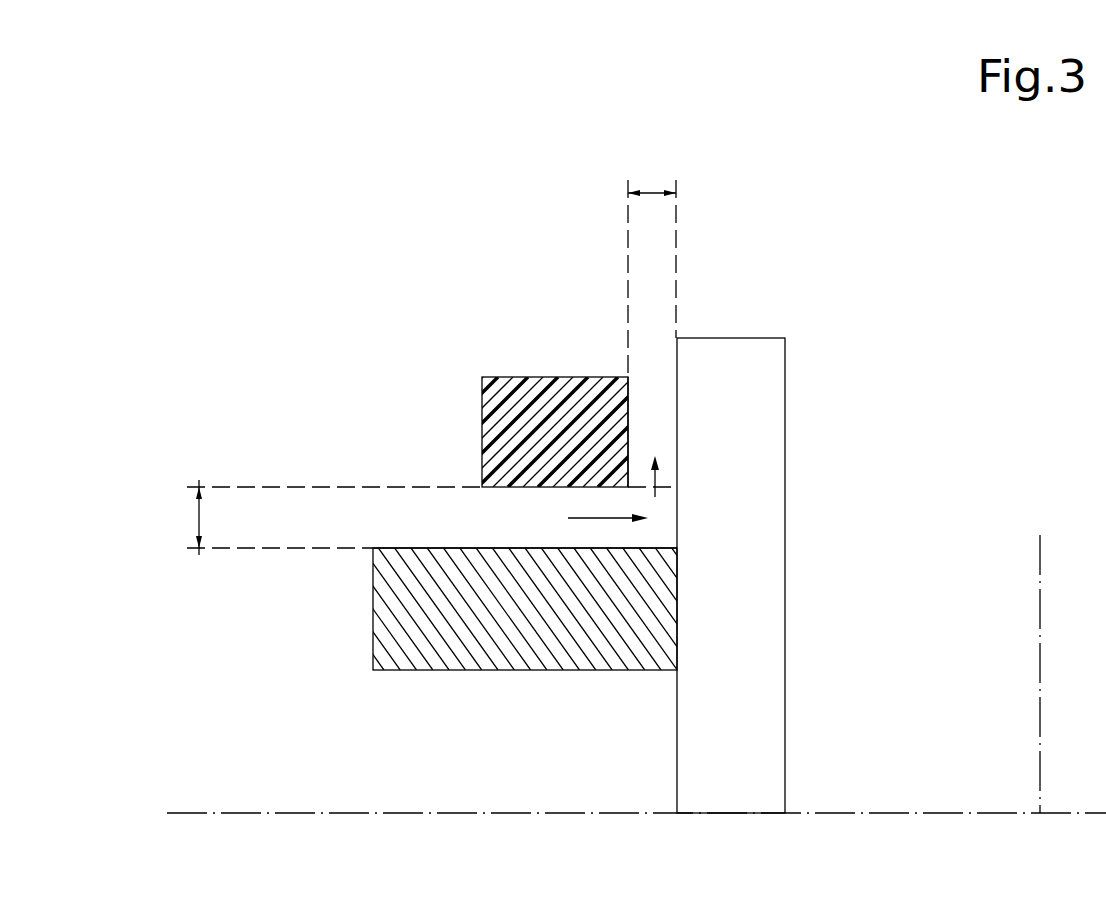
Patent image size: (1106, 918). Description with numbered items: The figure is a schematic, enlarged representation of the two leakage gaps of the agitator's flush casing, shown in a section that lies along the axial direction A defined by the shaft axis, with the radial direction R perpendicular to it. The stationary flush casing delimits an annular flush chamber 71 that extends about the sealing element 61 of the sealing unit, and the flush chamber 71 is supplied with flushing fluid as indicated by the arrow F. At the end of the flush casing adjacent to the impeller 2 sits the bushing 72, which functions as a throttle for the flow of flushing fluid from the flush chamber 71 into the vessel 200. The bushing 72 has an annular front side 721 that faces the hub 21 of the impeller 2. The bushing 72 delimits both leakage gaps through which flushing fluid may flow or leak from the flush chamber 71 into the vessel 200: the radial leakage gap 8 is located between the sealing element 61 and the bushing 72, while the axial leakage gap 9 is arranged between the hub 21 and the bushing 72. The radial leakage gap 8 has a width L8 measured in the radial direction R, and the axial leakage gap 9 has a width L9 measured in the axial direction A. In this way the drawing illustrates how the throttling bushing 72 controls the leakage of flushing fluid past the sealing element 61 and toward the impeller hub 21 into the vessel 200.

The vessel 200 is at (997, 346).
The impeller 2 is at (785, 575).
The hub 21 is at (787, 585).
The flush chamber 71 is at (433, 438).
The bushing 72 is at (545, 375).
The annular front side 721 is at (628, 420).
The axial leakage gap 9 is at (650, 445).
The sealing element 61 is at (425, 672).
The radial leakage gap 8 is at (530, 517).
The arrow indicating flushing fluid supply F is at (657, 484).
The width of the radial leakage gap L8 is at (197, 516).
The width of the axial leakage gap L9 is at (648, 190).
The radial direction R is at (1043, 637).
The axial direction A is at (955, 815).